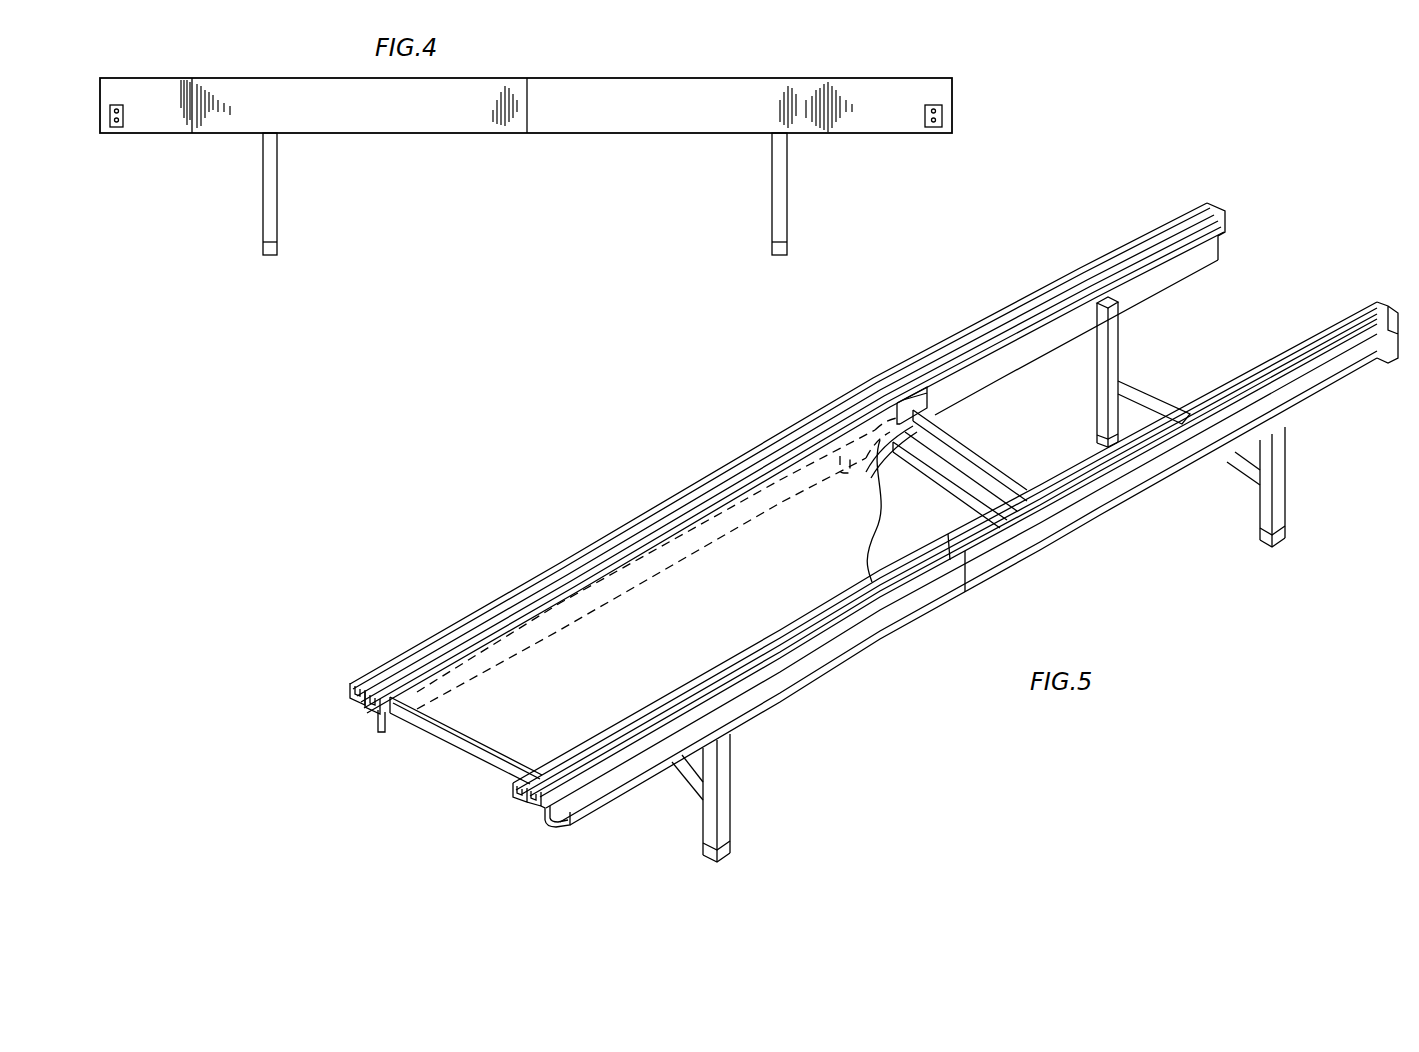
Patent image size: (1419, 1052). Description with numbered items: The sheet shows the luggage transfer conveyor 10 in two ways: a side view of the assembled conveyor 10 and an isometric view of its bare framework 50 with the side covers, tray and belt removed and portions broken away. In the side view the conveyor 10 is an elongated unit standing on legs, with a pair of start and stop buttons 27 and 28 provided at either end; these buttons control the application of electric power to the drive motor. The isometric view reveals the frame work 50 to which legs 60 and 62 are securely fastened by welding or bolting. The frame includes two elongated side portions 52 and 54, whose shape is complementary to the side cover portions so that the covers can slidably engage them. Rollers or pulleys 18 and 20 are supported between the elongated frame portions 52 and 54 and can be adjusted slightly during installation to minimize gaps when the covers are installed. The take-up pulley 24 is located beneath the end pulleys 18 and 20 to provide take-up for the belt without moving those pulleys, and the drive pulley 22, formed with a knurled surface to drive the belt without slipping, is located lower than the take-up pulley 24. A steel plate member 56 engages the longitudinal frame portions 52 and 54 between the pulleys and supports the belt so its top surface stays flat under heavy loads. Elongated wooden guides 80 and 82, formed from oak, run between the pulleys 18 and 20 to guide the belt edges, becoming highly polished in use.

In FIG. 4, the luggage transfer conveyor 10 is at (528, 172).
In FIG. 4, the start and stop button 27 is at (117, 128).
In FIG. 4, the start and stop button 28 is at (932, 128).
In FIG. 5, the intake end pulley 18 is at (483, 770).
In FIG. 5, the discharge end pulley 20 is at (967, 443).
In FIG. 5, the drive pulley 22 is at (948, 477).
In FIG. 5, the take-up pulley 24 is at (980, 477).
In FIG. 5, the framework 50 is at (801, 566).
In FIG. 5, the elongated side portion 52 is at (873, 389).
In FIG. 5, the elongated side portion 54 is at (1087, 465).
In FIG. 5, the steel plate member 56 is at (632, 603).
In FIG. 5, the leg 60 is at (1286, 495).
In FIG. 5, the leg 62 is at (730, 808).
In FIG. 5, the elongated wooden guide 80 is at (492, 623).
In FIG. 5, the elongated wooden guide 82 is at (745, 656).